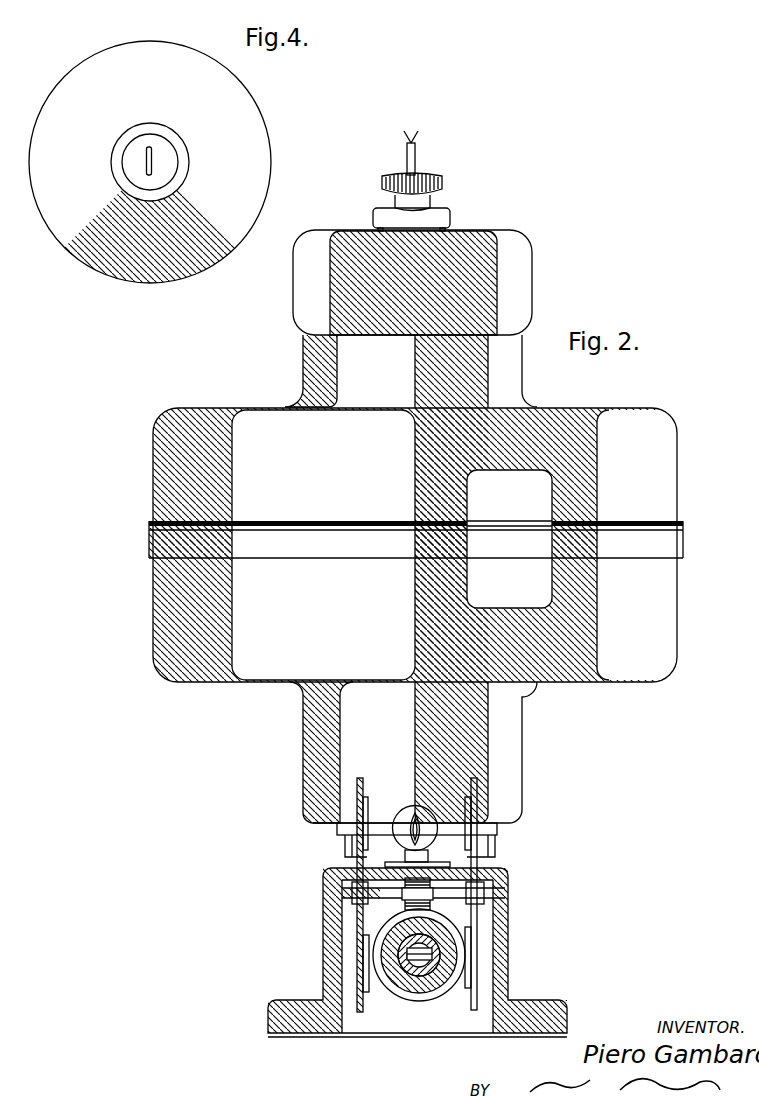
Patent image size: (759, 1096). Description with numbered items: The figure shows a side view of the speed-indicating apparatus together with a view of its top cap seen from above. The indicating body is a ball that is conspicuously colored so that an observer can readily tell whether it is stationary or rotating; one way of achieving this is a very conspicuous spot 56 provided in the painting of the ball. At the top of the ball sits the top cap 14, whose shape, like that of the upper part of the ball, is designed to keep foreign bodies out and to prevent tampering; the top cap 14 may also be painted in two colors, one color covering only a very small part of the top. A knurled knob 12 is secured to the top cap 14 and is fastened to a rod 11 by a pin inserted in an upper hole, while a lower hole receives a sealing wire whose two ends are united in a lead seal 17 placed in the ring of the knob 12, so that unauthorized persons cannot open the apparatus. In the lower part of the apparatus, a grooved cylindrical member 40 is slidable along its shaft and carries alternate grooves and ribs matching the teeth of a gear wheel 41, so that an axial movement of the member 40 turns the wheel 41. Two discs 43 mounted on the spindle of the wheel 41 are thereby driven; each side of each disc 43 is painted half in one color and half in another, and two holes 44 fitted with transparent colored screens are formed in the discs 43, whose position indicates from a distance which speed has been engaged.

In FIG. 2, the rod 11 is at (655, 443).
In FIG. 4, the knurled knob 12 is at (139, 143).
In FIG. 2, the knurled knob 12 is at (445, 181).
In FIG. 4, the top cap 14 is at (224, 101).
In FIG. 2, the top cap 14 is at (518, 285).
In FIG. 4, the lead seal 17 is at (147, 163).
In FIG. 2, the lead seal 17 is at (416, 152).
In FIG. 2, the grooved cylindrical member 40 is at (396, 995).
In FIG. 2, the gear wheel 41 is at (426, 882).
In FIG. 2, the discs 43 is at (470, 777).
In FIG. 2, the holes 44 is at (471, 813).
In FIG. 2, the conspicuous spot 56 is at (537, 583).